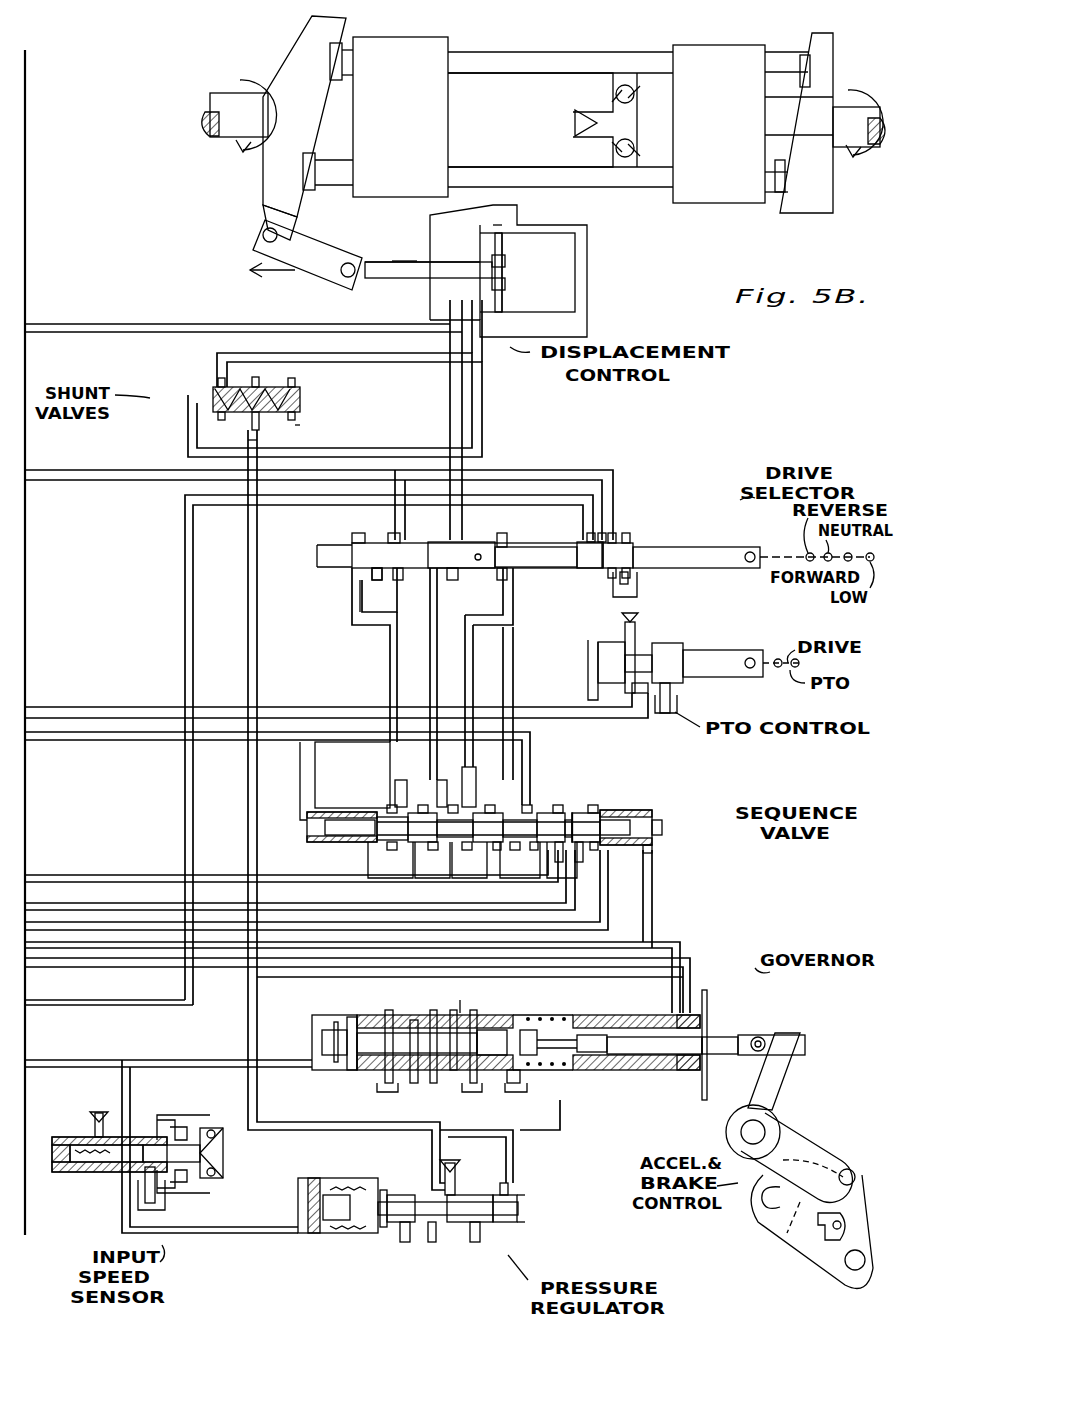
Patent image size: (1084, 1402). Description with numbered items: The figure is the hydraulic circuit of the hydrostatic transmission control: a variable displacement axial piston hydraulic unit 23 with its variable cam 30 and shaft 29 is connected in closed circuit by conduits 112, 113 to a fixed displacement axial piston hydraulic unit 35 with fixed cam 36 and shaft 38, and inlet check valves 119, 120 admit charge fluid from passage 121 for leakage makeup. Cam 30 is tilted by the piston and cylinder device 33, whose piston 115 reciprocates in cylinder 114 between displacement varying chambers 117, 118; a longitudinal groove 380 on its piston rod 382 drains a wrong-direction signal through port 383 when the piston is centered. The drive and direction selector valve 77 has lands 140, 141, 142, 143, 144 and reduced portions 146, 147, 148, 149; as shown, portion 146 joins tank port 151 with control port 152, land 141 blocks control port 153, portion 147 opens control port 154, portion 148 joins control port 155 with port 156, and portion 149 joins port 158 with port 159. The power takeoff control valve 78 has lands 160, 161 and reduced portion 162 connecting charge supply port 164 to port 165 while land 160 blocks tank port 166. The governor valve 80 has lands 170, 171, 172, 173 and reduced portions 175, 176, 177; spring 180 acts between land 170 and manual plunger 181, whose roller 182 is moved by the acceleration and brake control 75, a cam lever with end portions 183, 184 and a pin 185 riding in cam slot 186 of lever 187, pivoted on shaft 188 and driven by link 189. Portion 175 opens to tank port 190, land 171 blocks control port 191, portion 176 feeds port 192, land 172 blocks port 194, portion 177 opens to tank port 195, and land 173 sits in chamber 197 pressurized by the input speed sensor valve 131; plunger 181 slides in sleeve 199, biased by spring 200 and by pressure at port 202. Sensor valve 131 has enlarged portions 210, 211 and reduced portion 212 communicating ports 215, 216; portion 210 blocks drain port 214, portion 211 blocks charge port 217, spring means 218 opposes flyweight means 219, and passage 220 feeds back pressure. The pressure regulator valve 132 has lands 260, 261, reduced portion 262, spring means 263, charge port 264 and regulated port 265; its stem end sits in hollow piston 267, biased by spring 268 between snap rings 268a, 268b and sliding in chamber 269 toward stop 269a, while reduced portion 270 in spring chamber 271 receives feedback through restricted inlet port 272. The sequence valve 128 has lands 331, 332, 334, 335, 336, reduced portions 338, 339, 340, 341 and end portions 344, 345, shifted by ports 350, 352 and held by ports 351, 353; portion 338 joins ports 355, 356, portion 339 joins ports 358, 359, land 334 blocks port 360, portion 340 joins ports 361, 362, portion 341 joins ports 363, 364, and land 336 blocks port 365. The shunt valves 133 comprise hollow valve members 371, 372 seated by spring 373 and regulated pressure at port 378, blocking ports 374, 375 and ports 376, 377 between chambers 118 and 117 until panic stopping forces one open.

The variable displacement axial piston hydraulic unit 23 is at (389, 103).
The input shaft 29 is at (215, 100).
The variable cam 30 is at (310, 55).
The piston and cylinder device 33 is at (540, 271).
The fixed displacement axial piston hydraulic unit 35 is at (753, 106).
The fixed cam 36 is at (825, 68).
The output shaft 38 is at (845, 150).
The acceleration and brake control 75 is at (861, 1128).
The drive and direction selector valve 77 is at (550, 501).
The power takeoff control valve 78 is at (683, 654).
The governor valve 80 is at (593, 1023).
The conduit 112 is at (490, 55).
The conduit 113 is at (478, 170).
The cylinder 114 is at (550, 232).
The reciprocable piston 115 is at (505, 250).
The displacement varying chamber 117 is at (575, 268).
The displacement varying chamber 118 is at (482, 240).
The inlet check valve 119 is at (624, 85).
The inlet check valve 120 is at (628, 158).
The charge fluid passage 121 is at (586, 112).
The sequence valve 128 is at (564, 801).
The input speed sensor valve 131 is at (103, 1195).
The pressure regulator valve 132 is at (335, 1271).
The shunt valves 133 is at (211, 385).
The enlarged land portion 140 is at (712, 548).
The enlarged land portion 141 is at (582, 568).
The enlarged land portion 142 is at (505, 542).
The enlarged land portion 143 is at (400, 592).
The enlarged land portion 144 is at (340, 572).
The reduced stem portion 146 is at (620, 552).
The reduced stem portion 147 is at (545, 555).
The reduced stem portion 148 is at (460, 550).
The reduced stem portion 149 is at (392, 572).
The tank port 151 is at (640, 588).
The control port 152 is at (612, 535).
The control port 153 is at (595, 530).
The control port 154 is at (513, 580).
The control port 155 is at (445, 522).
The port 156 is at (438, 580).
The port 158 is at (400, 528).
The port 159 is at (325, 601).
The enlarged land portion 160 is at (690, 655).
The enlarged land portion 161 is at (598, 657).
The reduced stem portion 162 is at (640, 650).
The charge pressure supply port 164 is at (622, 620).
The port 165 is at (640, 712).
The tank port 166 is at (672, 700).
The enlarged land portion 170 is at (505, 1028).
The enlarged land portion 171 is at (482, 1080).
The enlarged land portion 172 is at (413, 1083).
The enlarged land portion 173 is at (340, 1040).
The reduced stem portion 175 is at (462, 1028).
The reduced stem portion 176 is at (433, 1030).
The reduced stem portion 177 is at (375, 1030).
The spring 180 is at (590, 1035).
The manually controlled plunger 181 is at (632, 1057).
The cam follower roller 182 is at (758, 1035).
The end portion 183 is at (780, 1072).
The opposite end portion 184 is at (795, 1140).
The pin 185 is at (785, 1222).
The cam slot 186 is at (760, 1200).
The pivoted lever 187 is at (810, 1240).
The shaft 188 is at (848, 1272).
The link 189 is at (830, 1245).
The tank port 190 is at (518, 1080).
The control port 191 is at (462, 1000).
The port 192 is at (452, 1080).
The port 194 is at (405, 1015).
The tank port 195 is at (385, 1067).
The chamber 197 is at (318, 1020).
The sleeve 199 is at (640, 1032).
The spring 200 is at (550, 1028).
The port 202 is at (690, 1010).
The enlarged portion 210 is at (190, 1162).
The enlarged stem portion 211 is at (78, 1137).
The reduced stem portion 212 is at (155, 1115).
The drain port 214 is at (150, 1178).
The port 215 is at (118, 1165).
The port 216 is at (100, 1110).
The charge pressure port 217 is at (88, 1127).
The spring means 218 is at (52, 1155).
The flyweight means 219 is at (178, 1127).
The longitudinal passage 220 is at (52, 1205).
The enlarged stem portion 260 is at (480, 1215).
The enlarged stem portion 261 is at (400, 1215).
The reduced stem portion 262 is at (440, 1225).
The spring means 263 is at (512, 1225).
The charge pressure port 264 is at (462, 1175).
The port 265 is at (425, 1195).
The hollow piston 267 is at (325, 1222).
The spring 268 is at (350, 1185).
The snap ring 268a is at (365, 1260).
The snap ring 268b is at (330, 1205).
The chamber 269 is at (300, 1185).
The stop 269a is at (350, 1185).
The reduced portion 270 is at (530, 1197).
The spring chamber 271 is at (530, 1210).
The restricted inlet port 272 is at (510, 1185).
The enlarged land portion 331 is at (590, 812).
The enlarged land portion 332 is at (580, 800).
The enlarged land portion 334 is at (515, 815).
The enlarged land portion 335 is at (457, 807).
The enlarged land portion 336 is at (385, 818).
The reduced stem portion 338 is at (560, 875).
The reduced stem portion 339 is at (535, 850).
The reduced stem portion 340 is at (494, 811).
The reduced stem portion 341 is at (424, 840).
The reduced end portion 344 is at (640, 828).
The reduced end portion 345 is at (320, 828).
The port 350 is at (350, 845).
The port 351 is at (302, 768).
The port 352 is at (595, 855).
The port 353 is at (655, 860).
The port 355 is at (578, 870).
The port 356 is at (523, 840).
The port 358 is at (562, 815).
The port 359 is at (540, 812).
The port 360 is at (488, 850).
The port 361 is at (488, 777).
The port 362 is at (465, 840).
The port 363 is at (417, 811).
The port 364 is at (390, 860).
The port 365 is at (395, 812).
The valve member 371 is at (248, 422).
The valve member 372 is at (300, 416).
The valve closing spring 373 is at (275, 371).
The port 374 is at (218, 380).
The port 375 is at (215, 416).
The port 376 is at (305, 398).
The port 377 is at (300, 438).
The port 378 is at (240, 445).
The longitudinal groove 380 is at (400, 258).
The piston rod 382 is at (340, 282).
The port 383 is at (440, 282).